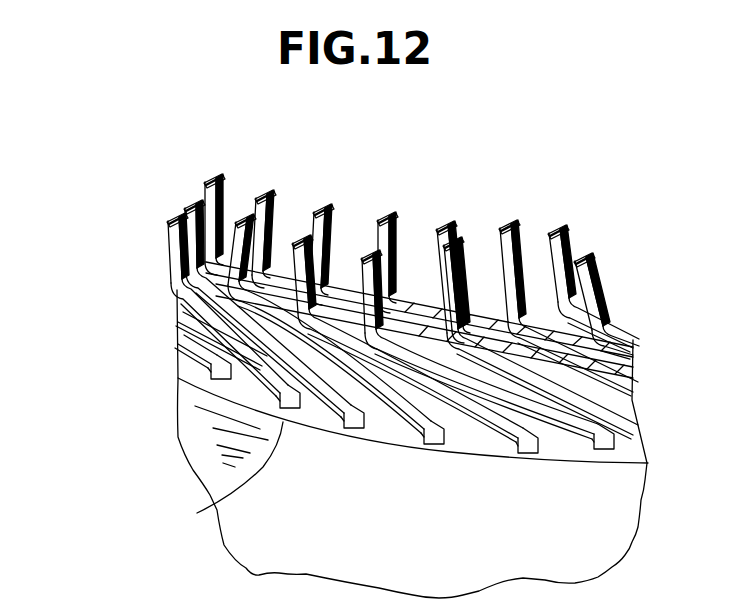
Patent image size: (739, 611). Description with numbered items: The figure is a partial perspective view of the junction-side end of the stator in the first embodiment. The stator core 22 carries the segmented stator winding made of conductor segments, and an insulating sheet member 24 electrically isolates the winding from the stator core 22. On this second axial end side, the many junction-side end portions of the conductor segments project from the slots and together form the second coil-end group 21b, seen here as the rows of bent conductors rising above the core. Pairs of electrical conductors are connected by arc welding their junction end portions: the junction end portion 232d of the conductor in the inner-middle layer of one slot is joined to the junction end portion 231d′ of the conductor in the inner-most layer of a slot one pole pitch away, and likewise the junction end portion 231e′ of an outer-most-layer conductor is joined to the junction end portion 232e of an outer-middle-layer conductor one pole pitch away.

The second coil-end group 21b is at (172, 293).
The stator core 22 is at (252, 398).
The insulating sheet member 24 is at (206, 506).
The junction end portion 231d′ is at (205, 176).
The junction end portion 231e′ is at (168, 220).
The junction end portion 232d is at (197, 187).
The junction end portion 232e is at (183, 207).